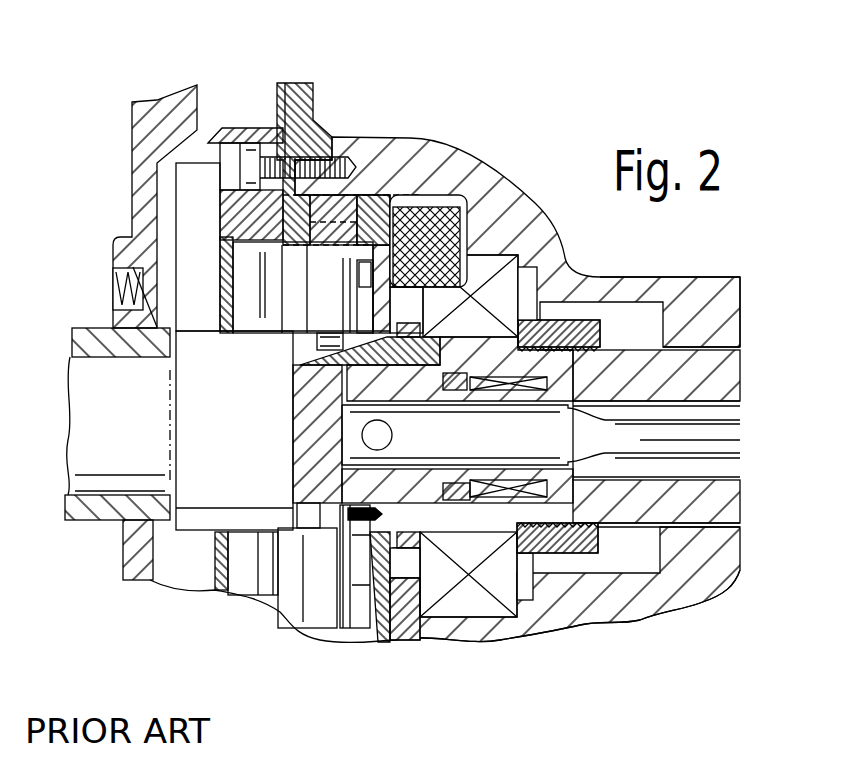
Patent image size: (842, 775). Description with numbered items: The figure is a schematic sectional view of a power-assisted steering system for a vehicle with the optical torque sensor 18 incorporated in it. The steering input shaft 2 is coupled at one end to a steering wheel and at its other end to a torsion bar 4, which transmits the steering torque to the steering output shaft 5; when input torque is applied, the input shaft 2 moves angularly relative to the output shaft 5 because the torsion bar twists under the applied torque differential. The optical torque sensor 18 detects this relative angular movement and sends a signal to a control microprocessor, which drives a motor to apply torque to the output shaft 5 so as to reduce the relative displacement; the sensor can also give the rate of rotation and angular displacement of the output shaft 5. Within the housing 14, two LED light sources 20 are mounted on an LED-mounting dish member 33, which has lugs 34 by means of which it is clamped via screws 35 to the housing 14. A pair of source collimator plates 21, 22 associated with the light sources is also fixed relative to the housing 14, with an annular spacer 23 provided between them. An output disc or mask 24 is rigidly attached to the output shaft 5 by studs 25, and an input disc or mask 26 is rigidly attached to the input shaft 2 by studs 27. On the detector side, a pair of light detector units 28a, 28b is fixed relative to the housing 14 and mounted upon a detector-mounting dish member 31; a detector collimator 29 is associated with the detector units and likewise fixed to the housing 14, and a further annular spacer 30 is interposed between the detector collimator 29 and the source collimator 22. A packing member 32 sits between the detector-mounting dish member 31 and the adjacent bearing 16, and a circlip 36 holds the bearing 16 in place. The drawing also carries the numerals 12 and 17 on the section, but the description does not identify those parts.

The steering input shaft 2 is at (693, 367).
The torsion bar 4 is at (713, 437).
The steering output shaft 5 is at (113, 387).
The clutch housing flange 12 is at (140, 195).
The housing 14 is at (410, 157).
The bearing 16 is at (513, 212).
The nut 17 is at (540, 550).
The optical torque sensor 18 is at (203, 262).
The LED light sources 20 is at (242, 328).
The source collimator plate 21 is at (263, 130).
The source collimator plate 22 is at (305, 243).
The annular spacer 23 is at (300, 215).
The output disc or mask 24 is at (340, 637).
The studs 25 is at (318, 348).
The input disc or mask 26 is at (360, 643).
The studs 27 is at (427, 642).
The light detector unit 28a is at (325, 383).
The light detector unit 28b is at (400, 640).
The detector collimator 29 is at (403, 190).
The annular spacer 30 is at (348, 250).
The detector-mounting dish member 31 is at (440, 210).
The packing member 32 is at (463, 222).
The LED-mounting dish member 33 is at (217, 223).
The lugs 34 is at (277, 130).
The screws 35 is at (242, 130).
The circlip 36 is at (500, 642).